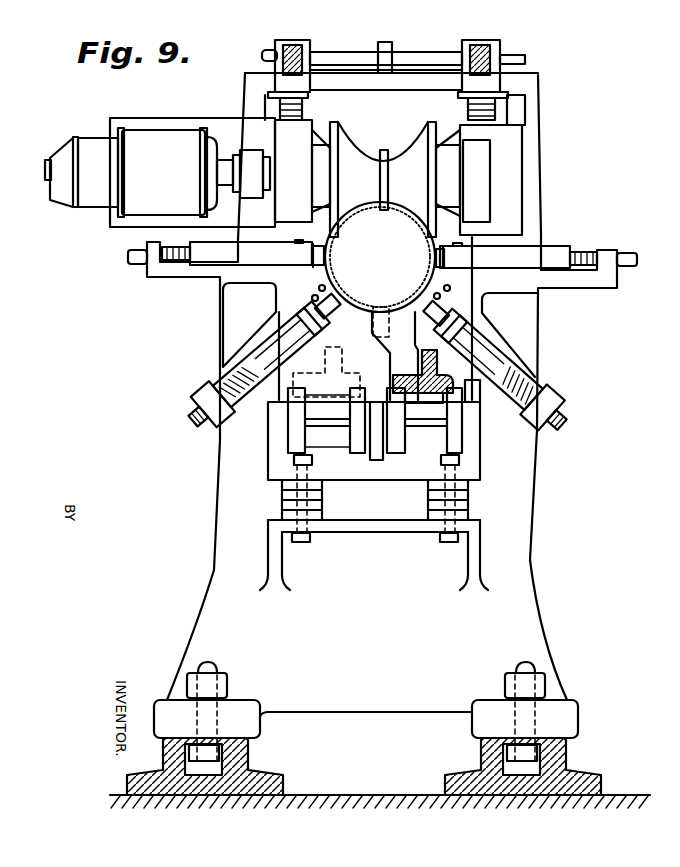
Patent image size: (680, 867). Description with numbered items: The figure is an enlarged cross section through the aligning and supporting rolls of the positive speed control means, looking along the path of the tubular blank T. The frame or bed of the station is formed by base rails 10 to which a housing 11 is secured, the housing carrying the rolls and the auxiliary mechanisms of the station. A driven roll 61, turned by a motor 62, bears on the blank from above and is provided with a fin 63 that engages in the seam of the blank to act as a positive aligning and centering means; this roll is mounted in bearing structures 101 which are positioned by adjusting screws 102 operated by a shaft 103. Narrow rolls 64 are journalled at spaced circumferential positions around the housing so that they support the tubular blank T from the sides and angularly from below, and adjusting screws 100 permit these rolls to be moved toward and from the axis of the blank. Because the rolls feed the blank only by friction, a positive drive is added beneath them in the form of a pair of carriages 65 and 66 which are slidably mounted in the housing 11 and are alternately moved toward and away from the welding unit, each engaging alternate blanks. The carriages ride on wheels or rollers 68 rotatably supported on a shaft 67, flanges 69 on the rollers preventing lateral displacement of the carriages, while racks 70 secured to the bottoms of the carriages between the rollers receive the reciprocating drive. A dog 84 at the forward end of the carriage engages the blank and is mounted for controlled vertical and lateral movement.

The rails 10 is at (247, 760).
The housings 11 is at (228, 518).
The rolls 61 is at (407, 153).
The motors 62 is at (163, 169).
The fins 63 is at (384, 152).
The rolls 64 is at (312, 258).
The carriage 65 is at (237, 392).
The carriage 66 is at (506, 395).
The shaft 67 is at (440, 422).
The rollers 68 is at (360, 440).
The flanges 69 is at (397, 440).
The racks 70 is at (428, 400).
The dog 84 is at (380, 307).
The adjusting screws 100 is at (137, 252).
The bearing structures 101 is at (478, 163).
The adjusting screws 102 is at (487, 117).
The shaft 103 is at (518, 54).
The tubular blank T is at (403, 217).